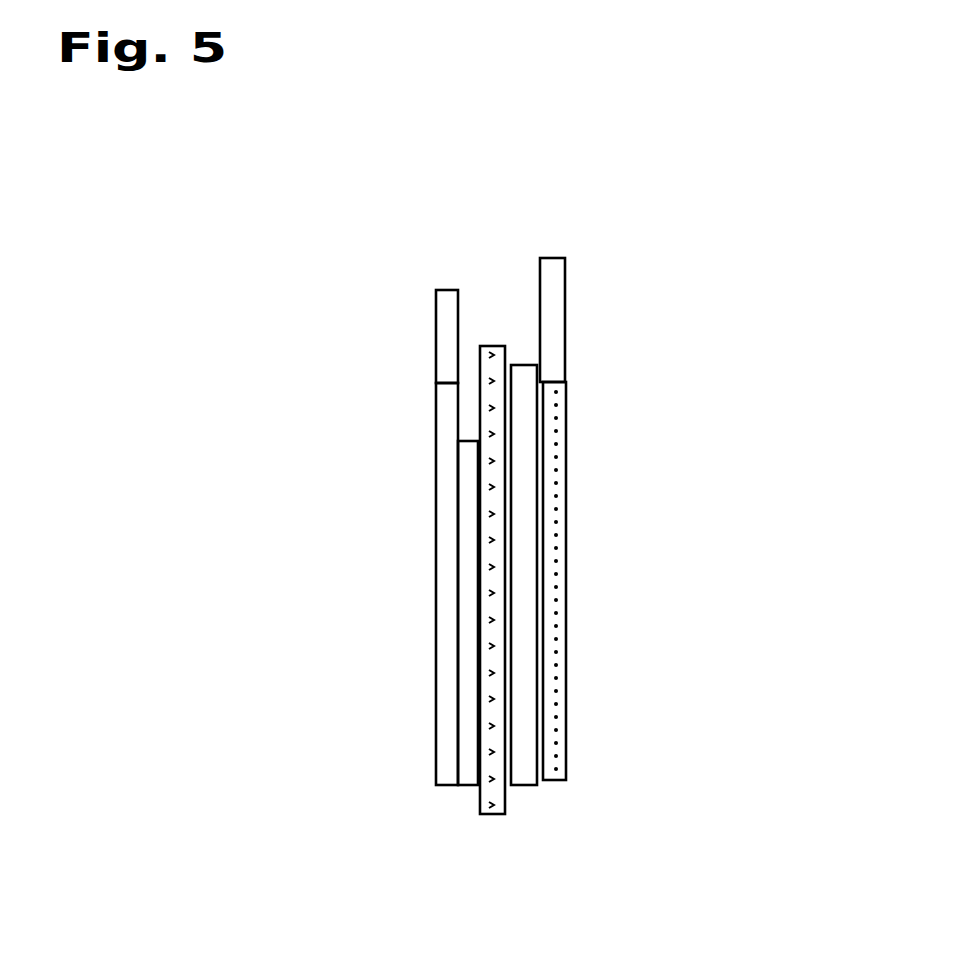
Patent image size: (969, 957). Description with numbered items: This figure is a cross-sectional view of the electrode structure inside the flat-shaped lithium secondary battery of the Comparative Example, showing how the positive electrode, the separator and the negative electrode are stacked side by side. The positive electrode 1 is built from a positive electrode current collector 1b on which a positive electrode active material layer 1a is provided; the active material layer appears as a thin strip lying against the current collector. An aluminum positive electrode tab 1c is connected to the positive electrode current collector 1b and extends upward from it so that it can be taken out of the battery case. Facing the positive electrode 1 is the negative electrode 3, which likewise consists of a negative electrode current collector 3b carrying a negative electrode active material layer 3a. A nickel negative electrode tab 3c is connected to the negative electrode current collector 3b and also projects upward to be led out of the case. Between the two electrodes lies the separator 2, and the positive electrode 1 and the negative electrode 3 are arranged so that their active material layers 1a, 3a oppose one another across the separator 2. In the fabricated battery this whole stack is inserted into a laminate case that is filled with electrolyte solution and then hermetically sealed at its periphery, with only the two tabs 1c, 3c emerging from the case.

The positive electrode 1 is at (463, 288).
The positive electrode active material layer 1a is at (474, 772).
The positive electrode current collector 1b is at (437, 598).
The positive electrode tab 1c is at (434, 347).
The separator 2 is at (484, 345).
The negative electrode 3 is at (590, 273).
The negative electrode active material layer 3a is at (524, 760).
The negative electrode current collector 3b is at (567, 661).
The negative electrode tab 3c is at (565, 316).